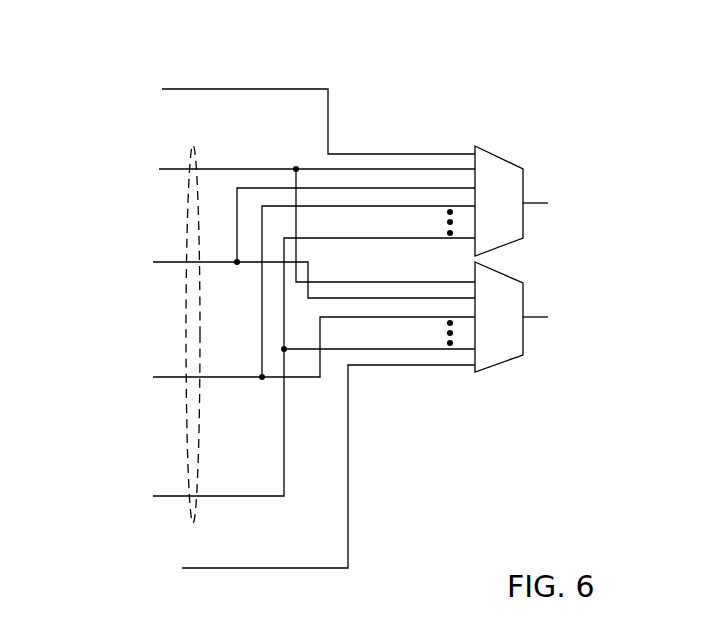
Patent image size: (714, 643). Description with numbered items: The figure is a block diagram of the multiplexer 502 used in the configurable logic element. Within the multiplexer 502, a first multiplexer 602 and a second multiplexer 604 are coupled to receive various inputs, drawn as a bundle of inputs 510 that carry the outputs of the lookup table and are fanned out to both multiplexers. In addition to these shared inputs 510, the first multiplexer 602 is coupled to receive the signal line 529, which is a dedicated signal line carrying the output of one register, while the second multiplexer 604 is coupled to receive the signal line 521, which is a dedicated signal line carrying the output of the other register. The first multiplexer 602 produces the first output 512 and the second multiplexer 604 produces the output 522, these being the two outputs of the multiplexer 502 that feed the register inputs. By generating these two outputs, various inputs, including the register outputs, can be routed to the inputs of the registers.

The multiplexer 502 is at (97, 535).
The inputs 510 is at (190, 148).
The signal line 529 is at (275, 88).
The first multiplexer 602 is at (503, 152).
The first output 512 is at (528, 201).
The second multiplexer 604 is at (503, 270).
The output 522 is at (528, 316).
The signal line 521 is at (282, 569).